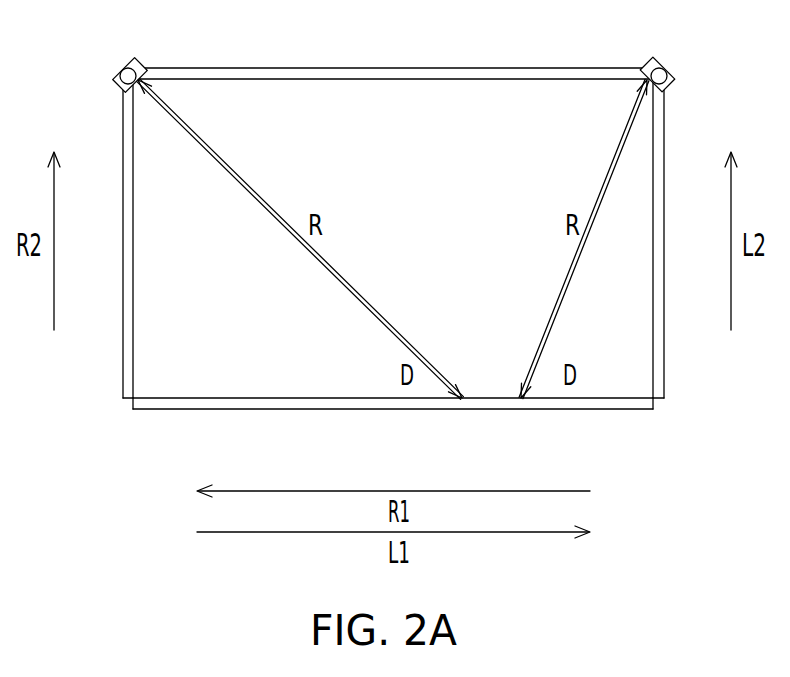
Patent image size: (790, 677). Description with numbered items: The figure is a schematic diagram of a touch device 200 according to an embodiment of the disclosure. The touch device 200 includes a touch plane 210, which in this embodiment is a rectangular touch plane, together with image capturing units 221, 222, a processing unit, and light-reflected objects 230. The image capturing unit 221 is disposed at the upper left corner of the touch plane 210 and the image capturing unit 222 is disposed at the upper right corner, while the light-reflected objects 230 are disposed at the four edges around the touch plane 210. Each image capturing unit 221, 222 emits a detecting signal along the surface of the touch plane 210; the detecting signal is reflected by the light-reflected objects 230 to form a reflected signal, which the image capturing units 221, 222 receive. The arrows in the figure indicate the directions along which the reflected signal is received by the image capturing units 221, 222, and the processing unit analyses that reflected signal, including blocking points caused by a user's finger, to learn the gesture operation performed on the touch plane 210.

The touch device 200 is at (410, 254).
The touch plane 210 is at (270, 102).
The image capturing unit 221 is at (122, 72).
The image capturing unit 222 is at (662, 74).
The light-reflected object 230 is at (348, 76).